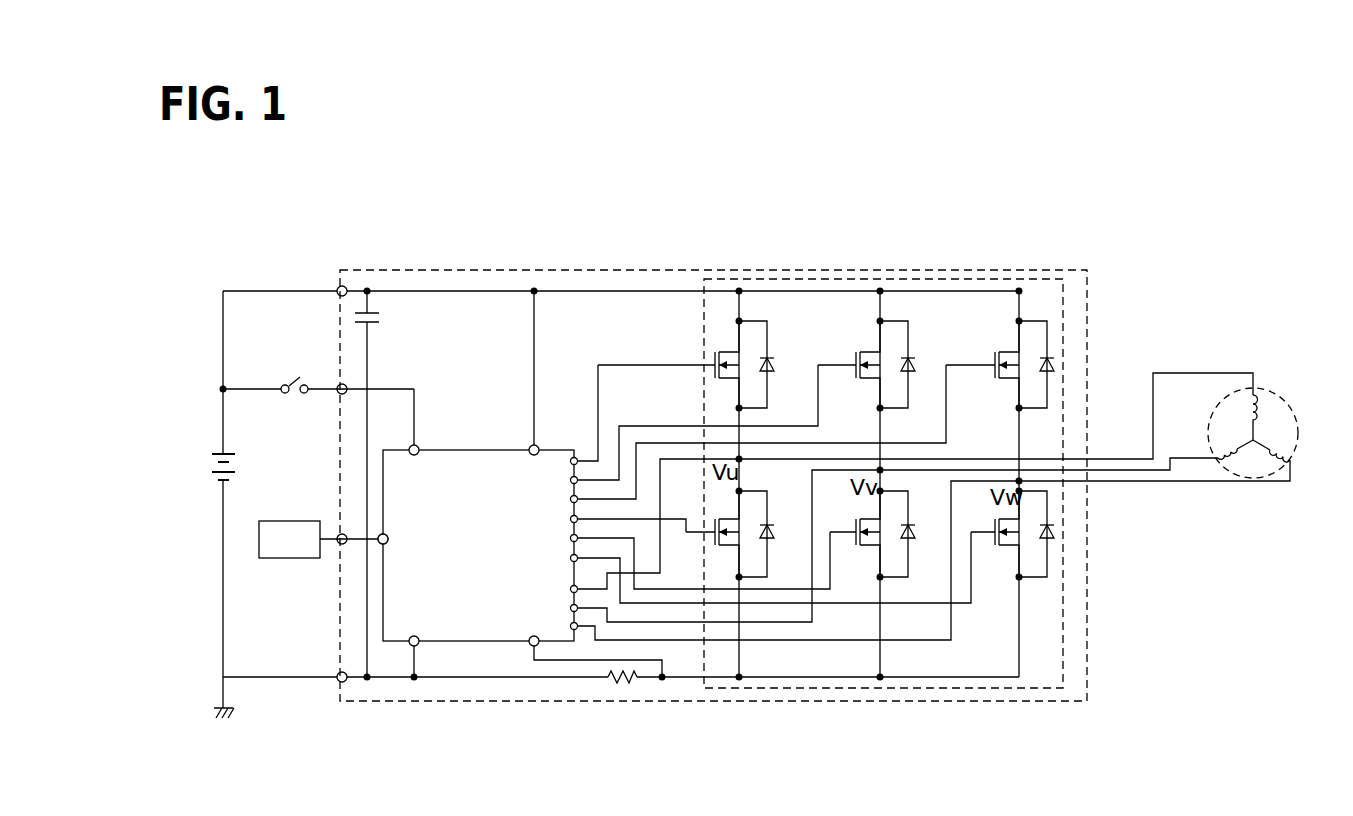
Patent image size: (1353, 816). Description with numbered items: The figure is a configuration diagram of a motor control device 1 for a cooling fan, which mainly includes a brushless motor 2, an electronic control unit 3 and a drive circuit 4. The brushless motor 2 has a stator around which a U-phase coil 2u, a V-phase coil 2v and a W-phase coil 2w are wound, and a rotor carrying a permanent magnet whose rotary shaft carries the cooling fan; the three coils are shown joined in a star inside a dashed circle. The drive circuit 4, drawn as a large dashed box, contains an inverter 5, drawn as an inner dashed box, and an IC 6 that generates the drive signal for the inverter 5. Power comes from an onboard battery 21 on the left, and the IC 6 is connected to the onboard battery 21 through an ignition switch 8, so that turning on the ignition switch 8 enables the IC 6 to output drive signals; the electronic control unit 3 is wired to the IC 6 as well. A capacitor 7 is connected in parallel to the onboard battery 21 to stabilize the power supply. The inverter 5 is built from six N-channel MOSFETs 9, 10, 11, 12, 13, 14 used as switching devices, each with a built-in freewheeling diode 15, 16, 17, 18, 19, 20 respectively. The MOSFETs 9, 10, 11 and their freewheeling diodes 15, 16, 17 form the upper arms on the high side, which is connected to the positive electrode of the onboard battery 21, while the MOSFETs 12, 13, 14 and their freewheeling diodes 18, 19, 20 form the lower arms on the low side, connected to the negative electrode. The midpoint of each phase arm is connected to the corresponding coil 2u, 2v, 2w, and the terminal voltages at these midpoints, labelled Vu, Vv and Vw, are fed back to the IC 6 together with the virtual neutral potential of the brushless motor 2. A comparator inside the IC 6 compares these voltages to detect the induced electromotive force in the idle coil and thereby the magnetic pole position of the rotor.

The motor control device 1 is at (863, 222).
The brushless motor 2 is at (1274, 426).
The U-phase coil 2u is at (1270, 417).
The V-phase coil 2v is at (1231, 441).
The W-phase coil 2w is at (1265, 461).
The electronic control unit 3 is at (272, 521).
The drive circuit 4 is at (572, 268).
The inverter 5 is at (940, 278).
The IC 6 is at (478, 449).
The capacitor 7 is at (366, 320).
The ignition switch 8 is at (292, 385).
The MOSFET 9 is at (713, 358).
The MOSFET 10 is at (853, 358).
The MOSFET 11 is at (992, 358).
The MOSFET 12 is at (713, 525).
The MOSFET 13 is at (853, 526).
The MOSFET 14 is at (992, 527).
The freewheeling diode 15 is at (767, 358).
The freewheeling diode 16 is at (908, 358).
The freewheeling diode 17 is at (1050, 360).
The freewheeling diode 18 is at (768, 525).
The freewheeling diode 19 is at (909, 525).
The freewheeling diode 20 is at (1058, 524).
The onboard battery 21 is at (215, 452).